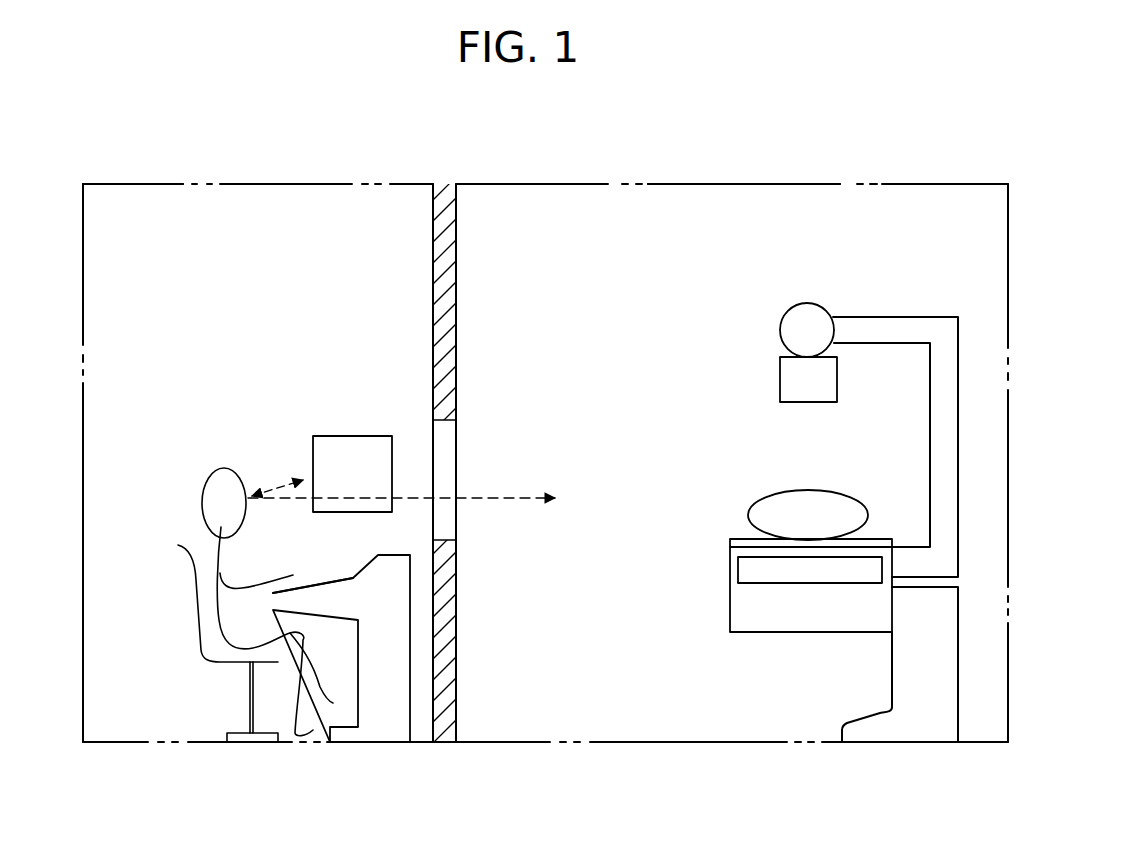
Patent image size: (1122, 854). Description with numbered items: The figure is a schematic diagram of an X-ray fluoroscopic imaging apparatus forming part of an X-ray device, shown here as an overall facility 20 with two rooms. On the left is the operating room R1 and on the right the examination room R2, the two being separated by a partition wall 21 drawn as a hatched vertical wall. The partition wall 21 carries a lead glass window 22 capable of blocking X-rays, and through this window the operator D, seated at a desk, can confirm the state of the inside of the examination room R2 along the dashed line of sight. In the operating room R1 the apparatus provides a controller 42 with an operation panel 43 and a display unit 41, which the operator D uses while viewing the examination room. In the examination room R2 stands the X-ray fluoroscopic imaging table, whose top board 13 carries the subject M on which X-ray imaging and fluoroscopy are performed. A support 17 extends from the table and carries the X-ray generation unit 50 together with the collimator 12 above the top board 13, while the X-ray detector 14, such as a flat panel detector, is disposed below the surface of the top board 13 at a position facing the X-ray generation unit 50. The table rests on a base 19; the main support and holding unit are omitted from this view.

The operating room R1 is at (249, 184).
The examination room R2 is at (693, 184).
The inspection facility / floor 20 is at (520, 742).
The partition wall 21 is at (456, 248).
The lead glass window 22 is at (447, 447).
The display unit 41 is at (325, 448).
The controller 42 is at (382, 722).
The operation panel 43 is at (306, 572).
The operator D is at (213, 498).
The X-ray generation unit 50 is at (808, 315).
The collimator 12 is at (820, 378).
The support 17 is at (947, 395).
The subject M is at (817, 490).
The top board 13 is at (730, 544).
The X-ray detector 14 is at (838, 570).
The base 19 is at (935, 675).